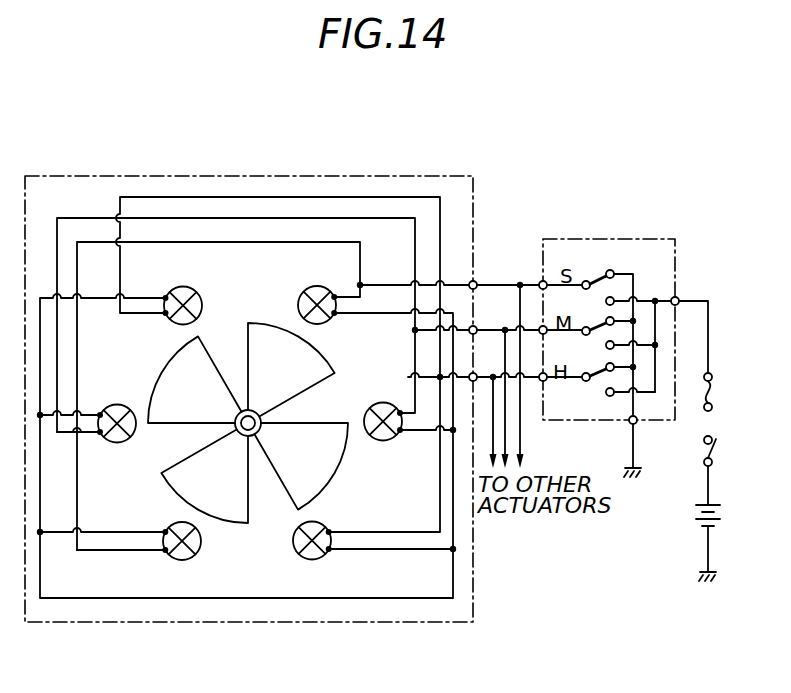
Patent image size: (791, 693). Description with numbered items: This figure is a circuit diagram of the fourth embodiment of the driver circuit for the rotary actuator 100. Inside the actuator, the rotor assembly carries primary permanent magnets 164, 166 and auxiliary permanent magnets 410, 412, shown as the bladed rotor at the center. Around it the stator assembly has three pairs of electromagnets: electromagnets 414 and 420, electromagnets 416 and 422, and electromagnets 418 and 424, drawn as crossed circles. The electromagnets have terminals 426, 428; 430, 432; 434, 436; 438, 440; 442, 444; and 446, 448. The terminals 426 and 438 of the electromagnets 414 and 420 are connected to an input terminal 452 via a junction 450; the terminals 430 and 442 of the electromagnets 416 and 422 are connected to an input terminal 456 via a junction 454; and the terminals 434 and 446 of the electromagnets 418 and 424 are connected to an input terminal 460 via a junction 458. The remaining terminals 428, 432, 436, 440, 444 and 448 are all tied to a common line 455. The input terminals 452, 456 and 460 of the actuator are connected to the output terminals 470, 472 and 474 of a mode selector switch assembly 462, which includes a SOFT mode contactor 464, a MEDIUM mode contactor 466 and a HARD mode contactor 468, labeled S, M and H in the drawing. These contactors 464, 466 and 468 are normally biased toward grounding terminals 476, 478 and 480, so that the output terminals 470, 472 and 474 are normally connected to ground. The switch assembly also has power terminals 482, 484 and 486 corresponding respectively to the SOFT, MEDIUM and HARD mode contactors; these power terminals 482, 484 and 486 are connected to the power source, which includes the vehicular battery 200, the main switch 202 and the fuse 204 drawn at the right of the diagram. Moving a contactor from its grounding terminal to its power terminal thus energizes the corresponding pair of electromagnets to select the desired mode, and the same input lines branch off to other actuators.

The actuator housing 100 is at (484, 186).
The primary permanent magnet 164 is at (268, 306).
The primary permanent magnet 166 is at (170, 478).
The vehicular battery 200 is at (690, 522).
The main switch 202 is at (704, 452).
The fuse 204 is at (704, 396).
The auxiliary permanent magnet 410 is at (166, 369).
The auxiliary permanent magnet 412 is at (338, 472).
The electromagnet 414 is at (300, 302).
The electromagnet 416 is at (364, 418).
The electromagnet 418 is at (309, 559).
The electromagnet 420 is at (201, 551).
The electromagnet 422 is at (136, 434).
The electromagnet 424 is at (194, 292).
The terminal 426 is at (335, 293).
The terminal 428 is at (337, 312).
The terminal 430 is at (399, 410).
The terminal 432 is at (405, 434).
The terminal 434 is at (330, 530).
The terminal 436 is at (331, 552).
The terminal 438 is at (165, 551).
The terminal 440 is at (164, 531).
The terminal 442 is at (101, 435).
The terminal 444 is at (102, 413).
The terminal 446 is at (165, 314).
The terminal 448 is at (166, 296).
The junction 450 is at (362, 285).
The input terminal 452 is at (476, 282).
The junction 454 is at (413, 330).
The common line 455 is at (453, 434).
The input terminal 456 is at (475, 327).
The junction 458 is at (409, 378).
The input terminal 460 is at (470, 376).
The mode selector switch assembly 462 is at (655, 234).
The SOFT mode contactor 464 is at (597, 280).
The MEDIUM mode contactor 466 is at (598, 326).
The HARD mode contactor 468 is at (596, 379).
The output terminal 470 is at (541, 282).
The output terminal 472 is at (546, 334).
The output terminal 474 is at (541, 382).
The grounding terminal 476 is at (615, 273).
The grounding terminal 478 is at (614, 320).
The grounding terminal 480 is at (614, 367).
The power terminal 482 is at (614, 300).
The power terminal 484 is at (614, 345).
The power terminal 486 is at (610, 397).